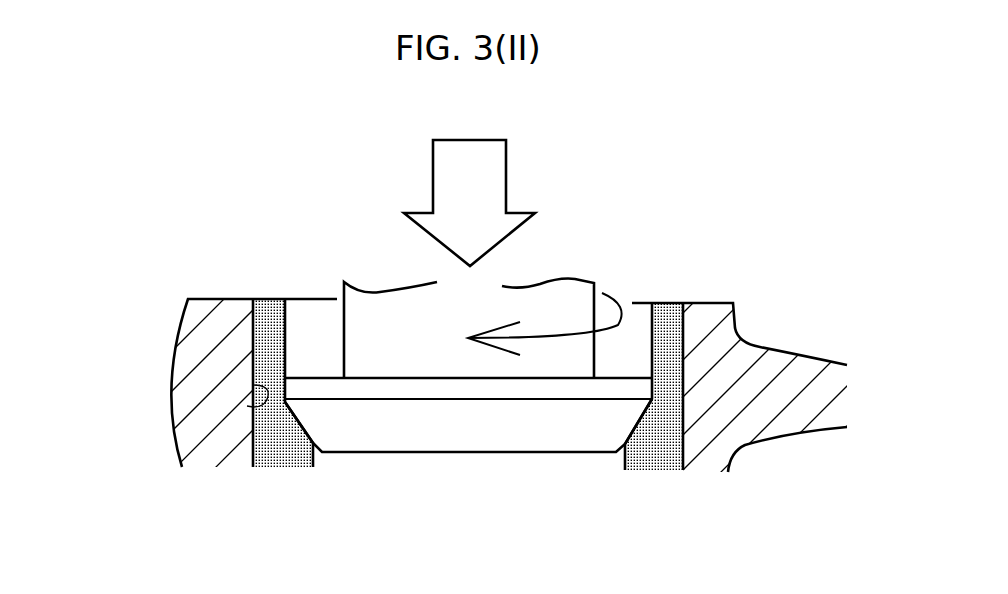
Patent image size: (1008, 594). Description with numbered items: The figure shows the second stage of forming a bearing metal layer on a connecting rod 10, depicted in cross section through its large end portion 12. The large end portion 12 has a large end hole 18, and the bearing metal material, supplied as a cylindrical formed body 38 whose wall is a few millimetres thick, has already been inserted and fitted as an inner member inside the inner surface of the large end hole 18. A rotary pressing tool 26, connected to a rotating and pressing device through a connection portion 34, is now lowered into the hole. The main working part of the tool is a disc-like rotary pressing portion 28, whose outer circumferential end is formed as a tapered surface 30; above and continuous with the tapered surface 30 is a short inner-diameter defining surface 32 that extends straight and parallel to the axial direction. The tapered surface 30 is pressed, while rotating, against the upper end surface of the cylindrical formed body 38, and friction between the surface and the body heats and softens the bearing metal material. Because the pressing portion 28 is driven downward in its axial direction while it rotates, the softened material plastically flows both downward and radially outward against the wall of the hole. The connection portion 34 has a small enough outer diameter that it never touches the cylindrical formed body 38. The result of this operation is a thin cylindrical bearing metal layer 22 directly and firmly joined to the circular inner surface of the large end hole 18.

The connecting rod 10 is at (700, 483).
The large end portion 12 is at (170, 392).
The large end hole 18 is at (253, 385).
The bearing metal layer 22 is at (270, 343).
The rotary pressing tool 26 is at (615, 243).
The disc-like rotary pressing portion 28 is at (628, 377).
The tapered surface 30 is at (633, 417).
The inner-diameter defining surface 32 is at (640, 388).
The connection portion 34 is at (373, 342).
The cylindrical formed body 38 is at (253, 421).